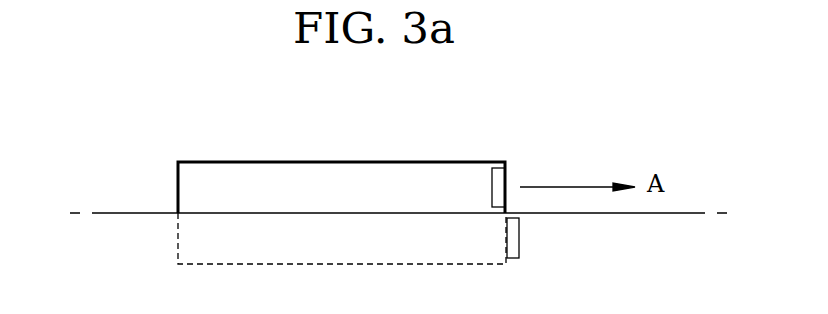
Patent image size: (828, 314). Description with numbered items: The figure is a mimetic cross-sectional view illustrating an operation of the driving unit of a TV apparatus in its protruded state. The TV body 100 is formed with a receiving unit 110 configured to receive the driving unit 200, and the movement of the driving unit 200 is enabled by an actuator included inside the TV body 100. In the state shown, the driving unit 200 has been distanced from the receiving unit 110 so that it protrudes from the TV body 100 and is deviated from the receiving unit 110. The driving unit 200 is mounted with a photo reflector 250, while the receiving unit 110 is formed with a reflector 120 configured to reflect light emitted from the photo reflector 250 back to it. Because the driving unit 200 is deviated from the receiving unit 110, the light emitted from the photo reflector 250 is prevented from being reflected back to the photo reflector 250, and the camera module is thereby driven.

The TV body 100 is at (120, 217).
The receiving unit 110 is at (177, 248).
The reflector 120 is at (517, 245).
The driving unit 200 is at (387, 178).
The photo reflector 250 is at (498, 185).